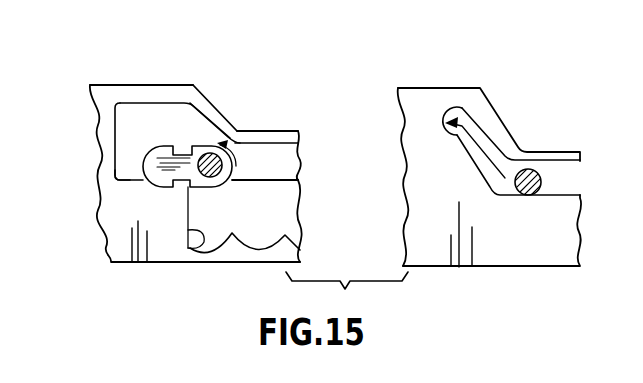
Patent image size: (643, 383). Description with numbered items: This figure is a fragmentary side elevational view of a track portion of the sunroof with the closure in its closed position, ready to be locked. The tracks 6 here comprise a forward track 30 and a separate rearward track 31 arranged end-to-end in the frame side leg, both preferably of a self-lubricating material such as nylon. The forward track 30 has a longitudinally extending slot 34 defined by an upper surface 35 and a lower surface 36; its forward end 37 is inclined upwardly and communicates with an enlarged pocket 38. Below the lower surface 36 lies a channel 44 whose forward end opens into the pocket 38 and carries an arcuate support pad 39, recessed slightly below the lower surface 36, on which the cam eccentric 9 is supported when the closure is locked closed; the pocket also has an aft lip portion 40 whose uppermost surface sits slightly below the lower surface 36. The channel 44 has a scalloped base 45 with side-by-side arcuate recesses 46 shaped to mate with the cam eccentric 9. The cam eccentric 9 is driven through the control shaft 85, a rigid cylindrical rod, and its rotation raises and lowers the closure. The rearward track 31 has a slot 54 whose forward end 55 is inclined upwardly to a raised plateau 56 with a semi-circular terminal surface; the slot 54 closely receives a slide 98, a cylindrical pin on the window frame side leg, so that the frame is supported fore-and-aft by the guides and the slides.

The tracks 6 is at (94, 79).
The pocket 38 is at (138, 116).
The cam eccentric 9 is at (126, 136).
The forward end 37 is at (203, 127).
The upper surface 35 is at (297, 147).
The slot 34 is at (300, 162).
The lower surface 36 is at (302, 177).
The control shaft 85 is at (232, 166).
The support pad 39 is at (106, 193).
The aft lip portion 40 is at (196, 189).
The scalloped base 45 is at (188, 232).
The recesses 46 is at (244, 237).
The channel 44 is at (297, 217).
The forward track 30 is at (108, 242).
The forward end 55 is at (478, 126).
The rearward track 31 is at (521, 126).
The raised plateau 56 is at (447, 137).
The slot 54 is at (560, 188).
The slides 98 is at (533, 198).